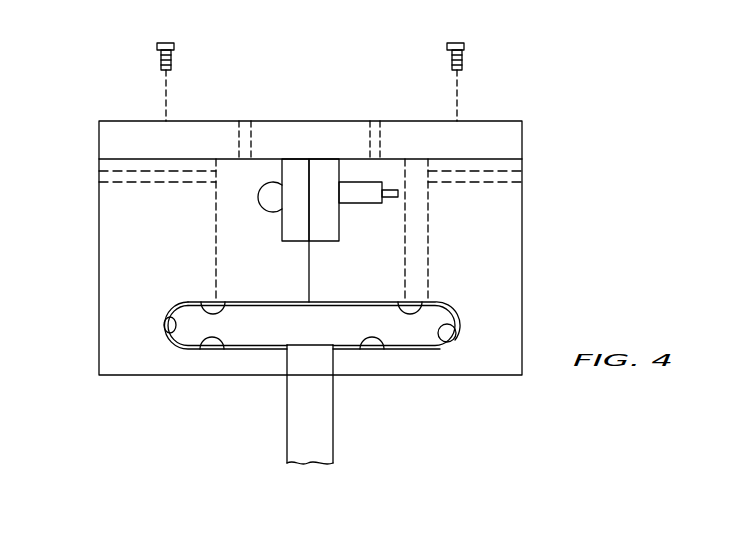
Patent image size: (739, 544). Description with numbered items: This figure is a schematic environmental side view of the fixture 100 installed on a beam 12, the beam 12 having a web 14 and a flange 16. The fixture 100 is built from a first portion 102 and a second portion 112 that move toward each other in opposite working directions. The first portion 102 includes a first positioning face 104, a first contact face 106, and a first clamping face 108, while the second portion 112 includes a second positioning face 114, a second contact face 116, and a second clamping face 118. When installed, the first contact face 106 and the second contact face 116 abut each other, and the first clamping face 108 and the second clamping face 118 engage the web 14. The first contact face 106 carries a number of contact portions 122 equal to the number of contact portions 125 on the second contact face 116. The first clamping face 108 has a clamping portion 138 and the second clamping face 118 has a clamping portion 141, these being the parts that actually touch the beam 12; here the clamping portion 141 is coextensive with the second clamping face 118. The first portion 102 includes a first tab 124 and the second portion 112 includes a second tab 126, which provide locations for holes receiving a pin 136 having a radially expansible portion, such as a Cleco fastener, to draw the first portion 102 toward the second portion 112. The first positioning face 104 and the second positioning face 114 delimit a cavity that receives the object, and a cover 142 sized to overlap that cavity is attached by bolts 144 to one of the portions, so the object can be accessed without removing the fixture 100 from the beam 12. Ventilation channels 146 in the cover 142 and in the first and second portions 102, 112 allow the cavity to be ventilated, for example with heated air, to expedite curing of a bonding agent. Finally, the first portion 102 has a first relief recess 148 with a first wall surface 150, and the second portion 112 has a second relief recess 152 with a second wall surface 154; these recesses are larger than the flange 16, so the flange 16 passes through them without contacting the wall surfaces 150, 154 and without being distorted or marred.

The beam 12 is at (265, 437).
The web 14 is at (315, 437).
The flange 16 is at (385, 327).
The fixture 100 is at (499, 89).
The first portion 102 is at (131, 396).
The first positioning face 104 is at (218, 270).
The first contact face 106 is at (310, 265).
The first clamping face 108 is at (300, 360).
The second portion 112 is at (473, 400).
The second positioning face 114 is at (403, 228).
The second contact face 116 is at (308, 283).
The second clamping face 118 is at (327, 373).
The contact portions of the first contact face 122 is at (301, 169).
The first tab 124 is at (283, 222).
The contact portions of the second contact face 125 is at (311, 169).
The second tab 126 is at (322, 238).
The pin 136 is at (350, 183).
The clamping portion of the first clamping face 138 is at (290, 346).
The clamping portion of the second clamping face 141 is at (325, 346).
The cover 142 is at (297, 120).
The bolts 144 is at (175, 46).
The ventilation channel 146 is at (245, 120).
The first relief recess 148 is at (168, 332).
The first wall surface 150 is at (204, 304).
The second relief recess 152 is at (455, 342).
The second wall surface 154 is at (418, 303).